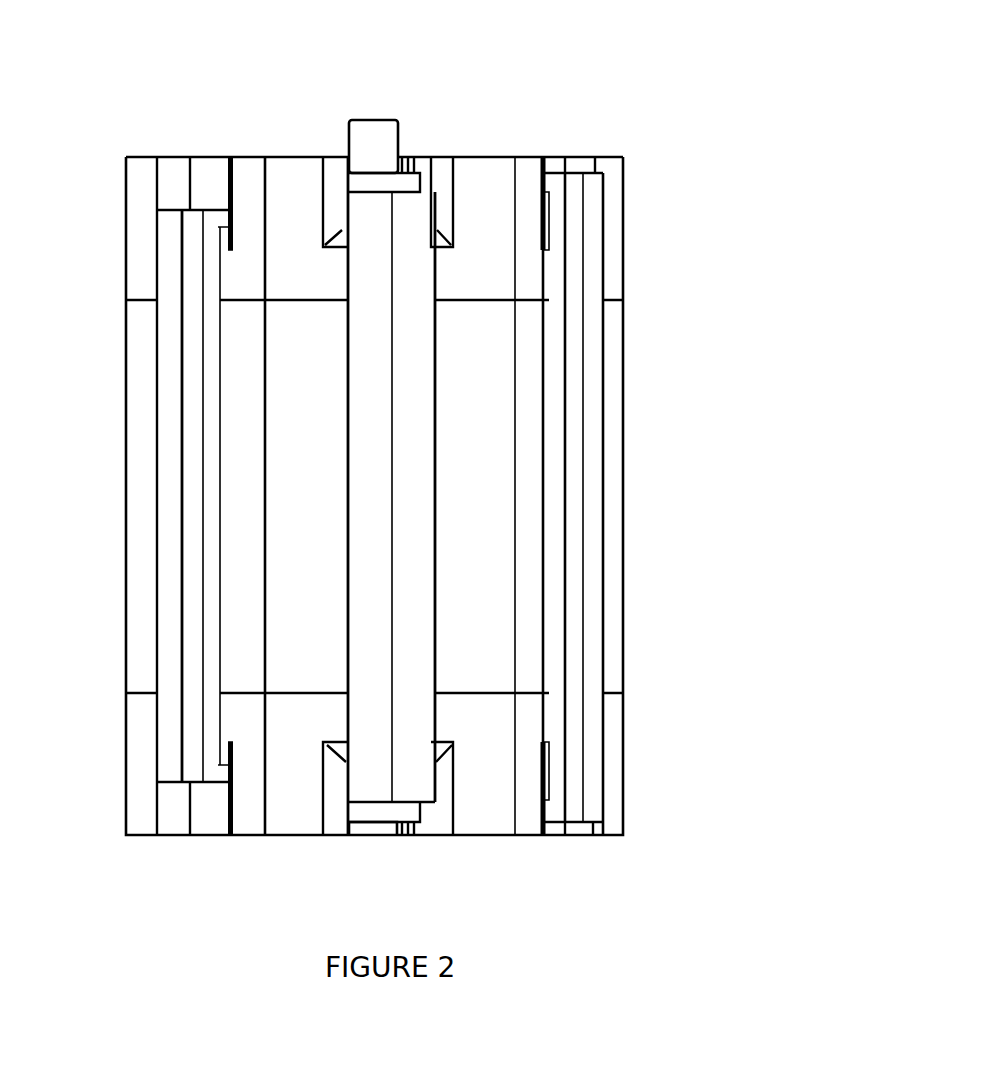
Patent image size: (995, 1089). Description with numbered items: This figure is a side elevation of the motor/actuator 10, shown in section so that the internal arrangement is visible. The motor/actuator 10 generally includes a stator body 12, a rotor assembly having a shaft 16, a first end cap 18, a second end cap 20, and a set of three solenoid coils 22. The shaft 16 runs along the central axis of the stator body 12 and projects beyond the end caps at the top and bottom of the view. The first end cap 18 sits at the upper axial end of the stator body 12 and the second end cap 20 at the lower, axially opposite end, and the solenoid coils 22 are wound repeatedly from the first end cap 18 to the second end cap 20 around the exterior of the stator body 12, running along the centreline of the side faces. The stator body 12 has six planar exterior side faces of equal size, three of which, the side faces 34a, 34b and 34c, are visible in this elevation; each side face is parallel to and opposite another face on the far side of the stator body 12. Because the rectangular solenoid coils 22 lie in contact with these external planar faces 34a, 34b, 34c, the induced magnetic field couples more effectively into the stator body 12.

The motor/actuator 10 is at (450, 423).
The stator body 12 is at (126, 632).
The shaft 16 is at (375, 135).
The first end cap 18 is at (126, 232).
The second end cap 20 is at (126, 757).
The solenoid coils 22 is at (157, 373).
The side face 34a is at (133, 528).
The side face 34b is at (305, 538).
The side face 34c is at (610, 557).